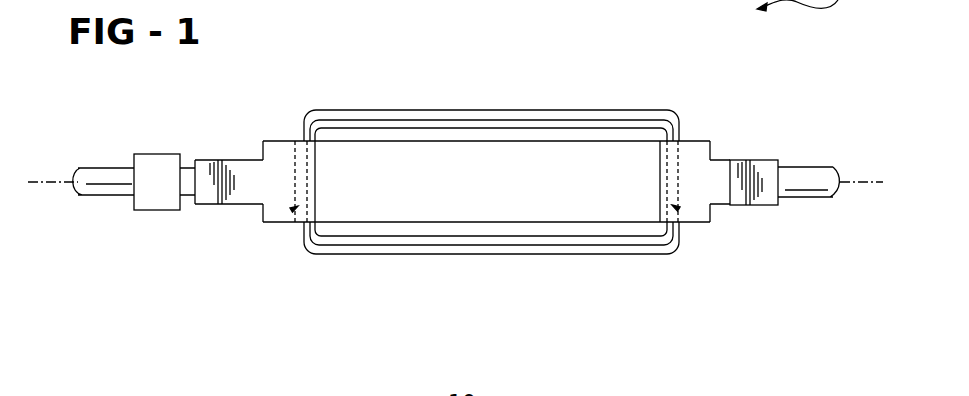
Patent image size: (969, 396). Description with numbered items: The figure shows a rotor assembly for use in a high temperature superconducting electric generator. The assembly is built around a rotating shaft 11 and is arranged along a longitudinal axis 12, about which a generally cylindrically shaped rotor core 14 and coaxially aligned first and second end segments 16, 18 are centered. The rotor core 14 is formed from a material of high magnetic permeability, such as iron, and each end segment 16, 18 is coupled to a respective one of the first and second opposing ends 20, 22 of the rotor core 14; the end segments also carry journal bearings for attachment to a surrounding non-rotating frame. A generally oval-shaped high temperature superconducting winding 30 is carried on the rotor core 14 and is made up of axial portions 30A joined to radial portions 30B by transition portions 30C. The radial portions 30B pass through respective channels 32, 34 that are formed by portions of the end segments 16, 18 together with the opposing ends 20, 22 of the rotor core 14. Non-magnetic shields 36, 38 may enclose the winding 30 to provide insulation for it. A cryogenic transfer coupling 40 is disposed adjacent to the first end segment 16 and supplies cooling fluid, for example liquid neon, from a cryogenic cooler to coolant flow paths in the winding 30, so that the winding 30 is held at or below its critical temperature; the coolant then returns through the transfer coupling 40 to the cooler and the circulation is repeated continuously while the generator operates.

The rotating shaft 11 is at (110, 178).
The longitudinal axis 12 is at (35, 181).
The rotor core 14 is at (483, 224).
The first end segment 16 is at (217, 205).
The second end segment 18 is at (742, 207).
The first end 20 is at (293, 187).
The second end 22 is at (660, 182).
The high temperature superconducting winding 30 is at (545, 126).
The axial portions 30A is at (490, 124).
The radial portions 30B is at (300, 163).
The transition portions 30C is at (303, 113).
The channel 32 is at (291, 210).
The channel 34 is at (679, 209).
The non-magnetic shield 36 is at (413, 110).
The non-magnetic shield 38 is at (401, 256).
The cryogenic transfer coupling 40 is at (150, 212).